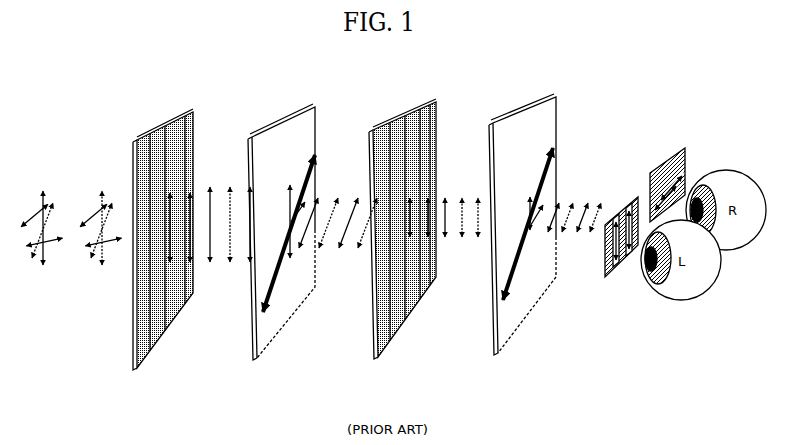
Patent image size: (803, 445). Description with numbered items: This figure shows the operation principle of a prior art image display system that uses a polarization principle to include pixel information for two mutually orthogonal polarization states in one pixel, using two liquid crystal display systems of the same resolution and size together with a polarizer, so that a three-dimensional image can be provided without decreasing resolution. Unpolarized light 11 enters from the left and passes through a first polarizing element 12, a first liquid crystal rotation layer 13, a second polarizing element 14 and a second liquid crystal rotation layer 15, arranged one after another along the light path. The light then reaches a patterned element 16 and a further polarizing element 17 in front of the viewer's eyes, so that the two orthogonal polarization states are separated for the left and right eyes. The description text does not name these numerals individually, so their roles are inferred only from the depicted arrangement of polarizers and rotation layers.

The unpolarized light 11 is at (56, 196).
The first polarizing plate 12 is at (166, 127).
The first liquid crystal (rotation) layer 13 is at (286, 119).
The second polarizing plate 14 is at (404, 115).
The second liquid crystal (rotation) layer 15 is at (525, 111).
The patterned retarder 16 is at (631, 203).
The polarizing glasses 17 is at (675, 152).